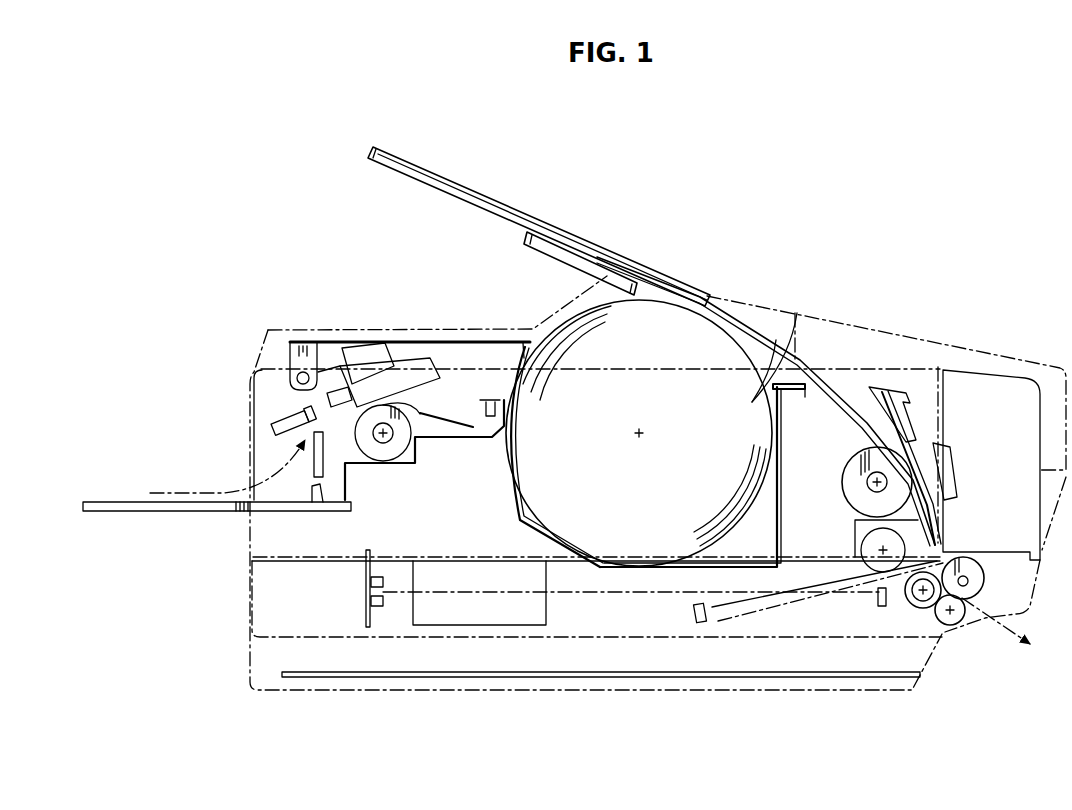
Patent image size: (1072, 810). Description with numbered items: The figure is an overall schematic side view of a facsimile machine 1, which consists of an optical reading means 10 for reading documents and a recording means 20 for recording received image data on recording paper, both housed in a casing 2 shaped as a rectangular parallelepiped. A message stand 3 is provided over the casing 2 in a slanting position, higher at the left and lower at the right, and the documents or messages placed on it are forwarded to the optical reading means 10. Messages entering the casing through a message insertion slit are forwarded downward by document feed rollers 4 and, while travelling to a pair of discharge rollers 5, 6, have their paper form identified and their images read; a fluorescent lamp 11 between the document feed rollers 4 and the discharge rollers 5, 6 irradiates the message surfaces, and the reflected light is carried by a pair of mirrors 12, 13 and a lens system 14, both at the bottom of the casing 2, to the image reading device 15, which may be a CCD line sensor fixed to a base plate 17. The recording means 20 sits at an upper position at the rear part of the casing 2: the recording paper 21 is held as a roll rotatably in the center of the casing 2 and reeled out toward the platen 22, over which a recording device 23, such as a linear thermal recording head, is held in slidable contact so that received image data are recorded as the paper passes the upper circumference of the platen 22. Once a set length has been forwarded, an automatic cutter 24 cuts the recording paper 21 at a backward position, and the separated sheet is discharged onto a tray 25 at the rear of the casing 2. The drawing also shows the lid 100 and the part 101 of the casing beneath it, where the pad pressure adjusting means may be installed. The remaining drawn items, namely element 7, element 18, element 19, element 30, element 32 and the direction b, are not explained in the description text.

The facsimile machine 1 is at (798, 167).
The casing 2 is at (724, 298).
The message stand 3 is at (458, 180).
The document feed rollers 4 is at (845, 470).
The discharge roller 5 is at (985, 575).
The discharge roller 6 is at (920, 609).
The discharge roller 7 is at (950, 626).
The optical reading means 10 is at (849, 630).
The fluorescent lamp 11 is at (858, 542).
The mirror 12 is at (690, 612).
The mirror 13 is at (881, 607).
The lens system 14 is at (548, 605).
The image reading device 15 is at (384, 582).
The base plate 17 is at (366, 620).
The base plate 18 is at (632, 680).
The illumination unit 19 is at (631, 257).
The recording means 20 is at (371, 324).
The recording paper 21 is at (728, 528).
The platen 22 is at (384, 452).
The recording device 23 is at (430, 372).
The automatic cutter 24 is at (266, 422).
The tray 25 is at (118, 513).
The fixing unit 30 is at (874, 420).
The lip 32 is at (803, 392).
The lid 100 is at (838, 337).
The part of the casing 101 is at (888, 367).
The paper discharge direction b is at (1008, 630).